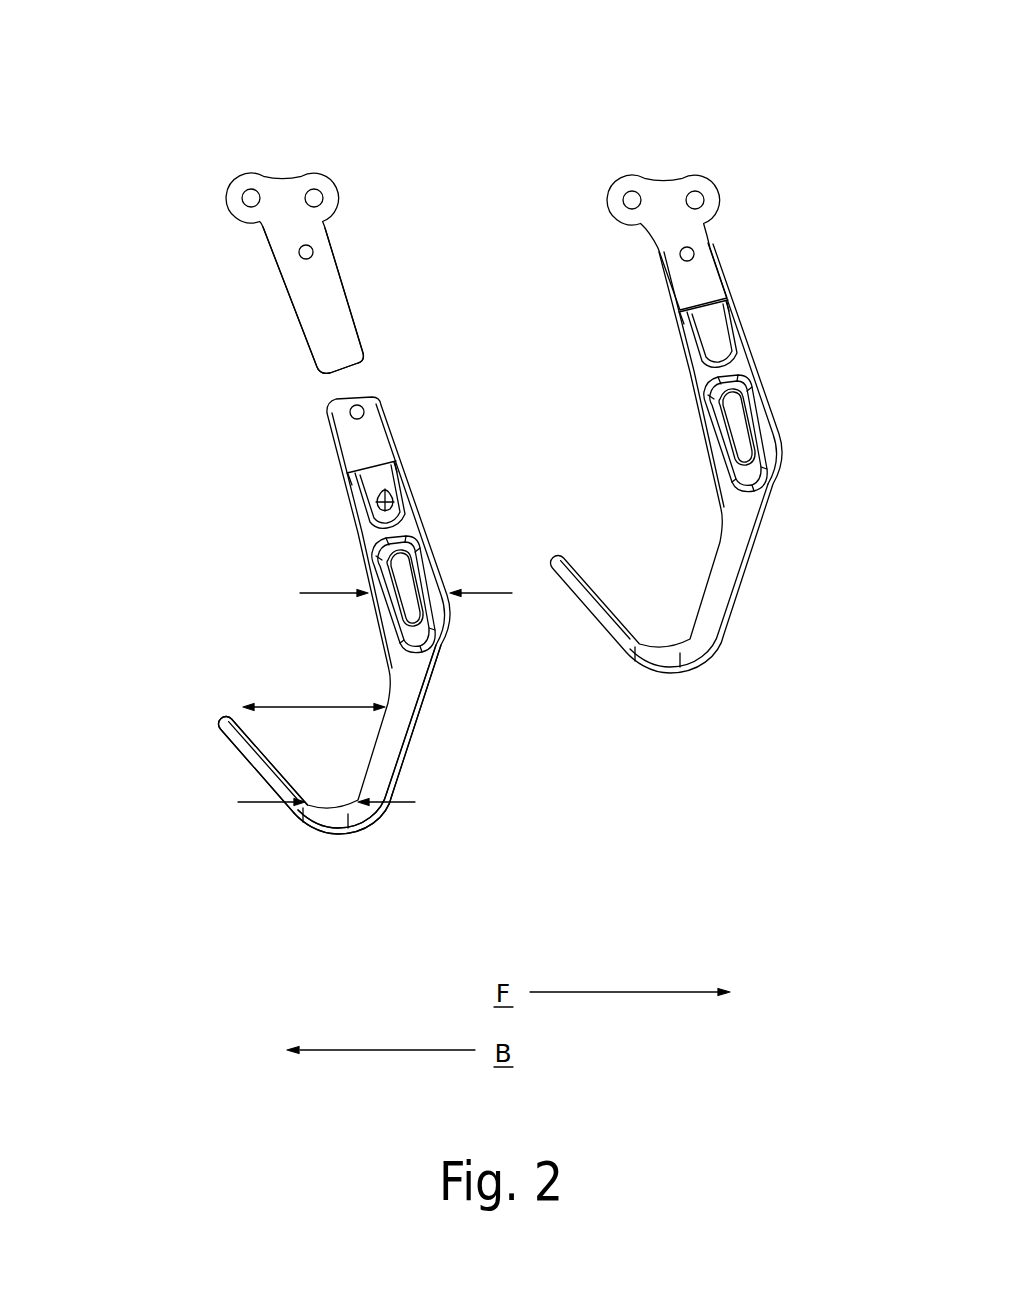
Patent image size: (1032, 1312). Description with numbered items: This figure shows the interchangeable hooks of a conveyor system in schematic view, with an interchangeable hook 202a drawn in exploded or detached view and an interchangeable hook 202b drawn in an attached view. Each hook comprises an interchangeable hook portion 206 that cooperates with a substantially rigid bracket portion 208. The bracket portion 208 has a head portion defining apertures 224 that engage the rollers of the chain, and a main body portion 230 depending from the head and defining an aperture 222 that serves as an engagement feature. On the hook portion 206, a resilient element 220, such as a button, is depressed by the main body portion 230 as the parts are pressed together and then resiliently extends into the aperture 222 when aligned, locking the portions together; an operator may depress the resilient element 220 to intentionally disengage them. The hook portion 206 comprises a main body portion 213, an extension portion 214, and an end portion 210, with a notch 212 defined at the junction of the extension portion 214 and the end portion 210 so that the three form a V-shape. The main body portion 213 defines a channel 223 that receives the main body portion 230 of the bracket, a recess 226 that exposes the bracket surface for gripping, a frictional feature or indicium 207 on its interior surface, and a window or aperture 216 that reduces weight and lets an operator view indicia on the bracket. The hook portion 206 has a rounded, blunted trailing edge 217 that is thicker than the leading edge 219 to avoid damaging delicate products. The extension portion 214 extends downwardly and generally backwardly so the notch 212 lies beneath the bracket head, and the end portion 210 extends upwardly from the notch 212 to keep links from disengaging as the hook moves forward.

The interchangeable hook 202a is at (280, 150).
The interchangeable hook 202b is at (659, 150).
The bracket portion 208 is at (298, 283).
The apertures 224 is at (253, 196).
The aperture 222 is at (313, 252).
The main body portion 230 is at (330, 334).
The interchangeable hook portion 206 is at (338, 450).
The resilient element 220 is at (363, 411).
The recess 226 is at (392, 462).
The frictional feature 207 is at (376, 505).
The channel 223 is at (394, 501).
The aperture 216 is at (375, 546).
The trailing edge 217 is at (380, 637).
The main body portion 213 is at (810, 363).
The leading edge 219 is at (746, 575).
The end portion 210 is at (225, 722).
The extension portion 214 is at (400, 734).
The notch 212 is at (307, 825).